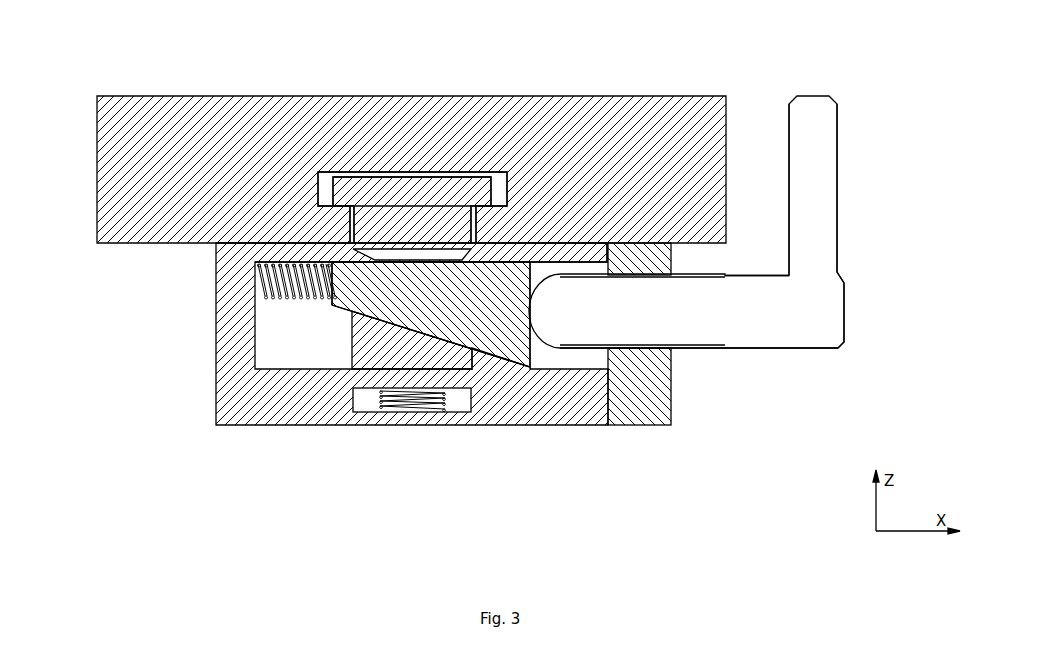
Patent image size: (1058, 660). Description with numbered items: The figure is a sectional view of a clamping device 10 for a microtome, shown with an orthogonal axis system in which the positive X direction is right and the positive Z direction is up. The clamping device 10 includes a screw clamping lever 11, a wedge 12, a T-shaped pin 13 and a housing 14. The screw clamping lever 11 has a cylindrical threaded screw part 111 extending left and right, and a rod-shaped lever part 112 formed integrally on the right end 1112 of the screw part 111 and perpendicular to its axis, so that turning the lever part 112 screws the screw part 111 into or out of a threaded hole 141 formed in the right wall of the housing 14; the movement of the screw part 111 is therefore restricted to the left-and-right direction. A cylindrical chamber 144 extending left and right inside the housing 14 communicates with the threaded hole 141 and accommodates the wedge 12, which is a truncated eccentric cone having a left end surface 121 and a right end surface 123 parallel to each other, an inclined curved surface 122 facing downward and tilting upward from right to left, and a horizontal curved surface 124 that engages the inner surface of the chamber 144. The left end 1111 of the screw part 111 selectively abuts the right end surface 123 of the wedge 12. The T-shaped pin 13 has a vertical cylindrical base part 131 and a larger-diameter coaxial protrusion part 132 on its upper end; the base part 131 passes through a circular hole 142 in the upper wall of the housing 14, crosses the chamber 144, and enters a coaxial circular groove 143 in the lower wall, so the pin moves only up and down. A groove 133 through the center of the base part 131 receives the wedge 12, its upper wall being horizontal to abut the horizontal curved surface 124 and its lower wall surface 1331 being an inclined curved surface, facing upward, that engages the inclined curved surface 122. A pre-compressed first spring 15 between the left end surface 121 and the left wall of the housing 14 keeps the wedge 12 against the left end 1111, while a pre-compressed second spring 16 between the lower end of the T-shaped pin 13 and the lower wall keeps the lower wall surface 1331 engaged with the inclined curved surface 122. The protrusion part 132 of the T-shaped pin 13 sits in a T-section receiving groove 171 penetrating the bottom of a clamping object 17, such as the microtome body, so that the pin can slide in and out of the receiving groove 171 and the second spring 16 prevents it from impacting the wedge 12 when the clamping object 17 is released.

The clamping device 10 is at (524, 47).
The screw clamping lever 11 is at (838, 160).
The screw part 111 is at (772, 317).
The left end of the screw part 1111 is at (643, 360).
The right end of the screw part 1112 is at (818, 330).
The lever part 112 is at (817, 217).
The wedge 12 is at (520, 372).
The left end surface 121 is at (325, 303).
The inclined curved surface 122 is at (486, 356).
The right end surface 123 is at (540, 315).
The horizontal curved surface 124 is at (687, 155).
The T-shaped pin 13 is at (473, 260).
The base part 131 is at (373, 357).
The protrusion part 132 is at (373, 253).
The groove 133 is at (327, 183).
The lower wall surface 1331 is at (528, 260).
The housing 14 is at (240, 405).
The threaded hole 141 is at (672, 350).
The circular hole 142 is at (353, 253).
The circular groove 143 is at (356, 400).
The chamber 144 is at (623, 357).
The first spring 15 is at (255, 285).
The second spring 16 is at (417, 403).
The clamping object 17 is at (727, 131).
The receiving groove 171 is at (395, 193).